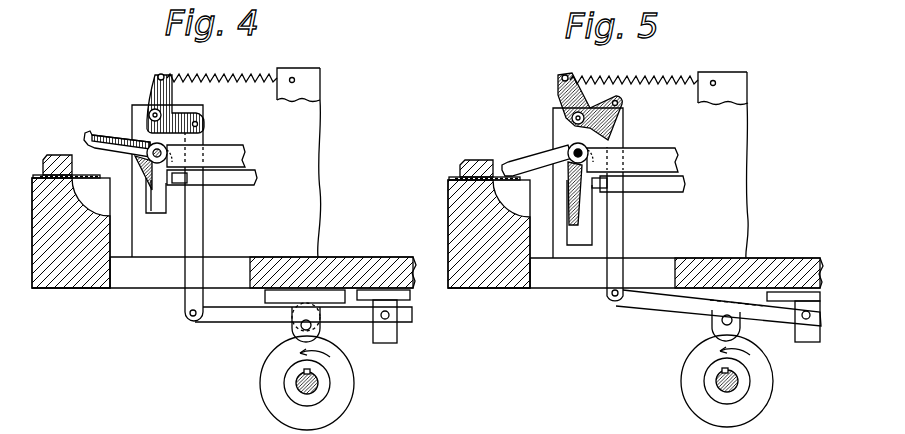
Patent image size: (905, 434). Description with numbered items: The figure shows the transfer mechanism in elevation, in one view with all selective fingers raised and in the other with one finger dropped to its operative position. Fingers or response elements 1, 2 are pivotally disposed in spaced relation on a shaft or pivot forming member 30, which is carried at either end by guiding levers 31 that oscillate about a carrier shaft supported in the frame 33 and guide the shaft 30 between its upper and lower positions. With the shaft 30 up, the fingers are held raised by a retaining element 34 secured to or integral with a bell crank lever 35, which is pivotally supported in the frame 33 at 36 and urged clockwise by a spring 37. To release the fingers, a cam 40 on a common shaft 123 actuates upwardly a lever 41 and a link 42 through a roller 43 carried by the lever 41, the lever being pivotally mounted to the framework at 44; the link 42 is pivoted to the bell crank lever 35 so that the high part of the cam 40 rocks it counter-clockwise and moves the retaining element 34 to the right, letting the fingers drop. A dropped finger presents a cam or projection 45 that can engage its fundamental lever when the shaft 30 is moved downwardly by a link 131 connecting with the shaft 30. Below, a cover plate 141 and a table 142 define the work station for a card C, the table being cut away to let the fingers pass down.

In FIG. 4, the finger 1 is at (119, 137).
In FIG. 5, the finger 1 is at (566, 213).
In FIG. 5, the finger 2 is at (506, 168).
In FIG. 4, the cloth C is at (83, 173).
In FIG. 5, the cloth C is at (452, 178).
In FIG. 4, the shaft or pivot forming member 30 is at (177, 150).
In FIG. 5, the shaft or pivot forming member 30 is at (570, 146).
In FIG. 4, the guiding lever 31 is at (233, 152).
In FIG. 5, the guiding lever 31 is at (660, 152).
In FIG. 4, the frame 33 is at (315, 153).
In FIG. 5, the frame 33 is at (730, 125).
In FIG. 4, the retaining element 34 is at (147, 183).
In FIG. 5, the retaining element 34 is at (592, 150).
In FIG. 4, the bell crank lever 35 is at (159, 75).
In FIG. 5, the bell crank lever 35 is at (563, 80).
In FIG. 4, the pivot of bell crank lever 36 is at (153, 110).
In FIG. 5, the pivot of bell crank lever 36 is at (572, 112).
In FIG. 4, the spring 37 is at (210, 81).
In FIG. 5, the spring 37 is at (636, 84).
In FIG. 4, the cam 40 is at (340, 397).
In FIG. 5, the cam 40 is at (767, 390).
In FIG. 4, the lever 41 is at (222, 320).
In FIG. 5, the lever 41 is at (650, 303).
In FIG. 4, the link 42 is at (200, 230).
In FIG. 5, the link 42 is at (625, 227).
In FIG. 4, the roller 43 is at (293, 332).
In FIG. 5, the roller 43 is at (710, 322).
In FIG. 4, the pivot on framework 44 is at (395, 315).
In FIG. 5, the pivot on framework 44 is at (807, 328).
In FIG. 4, the cam or projection 45 is at (134, 158).
In FIG. 5, the cam or projection 45 is at (583, 195).
In FIG. 4, the common shaft 123 is at (296, 382).
In FIG. 5, the common shaft 123 is at (717, 383).
In FIG. 4, the link 131 is at (163, 197).
In FIG. 5, the link 131 is at (587, 245).
In FIG. 4, the cover plate 141 is at (50, 155).
In FIG. 5, the cover plate 141 is at (494, 145).
In FIG. 4, the table 142 is at (72, 263).
In FIG. 5, the table 142 is at (457, 220).